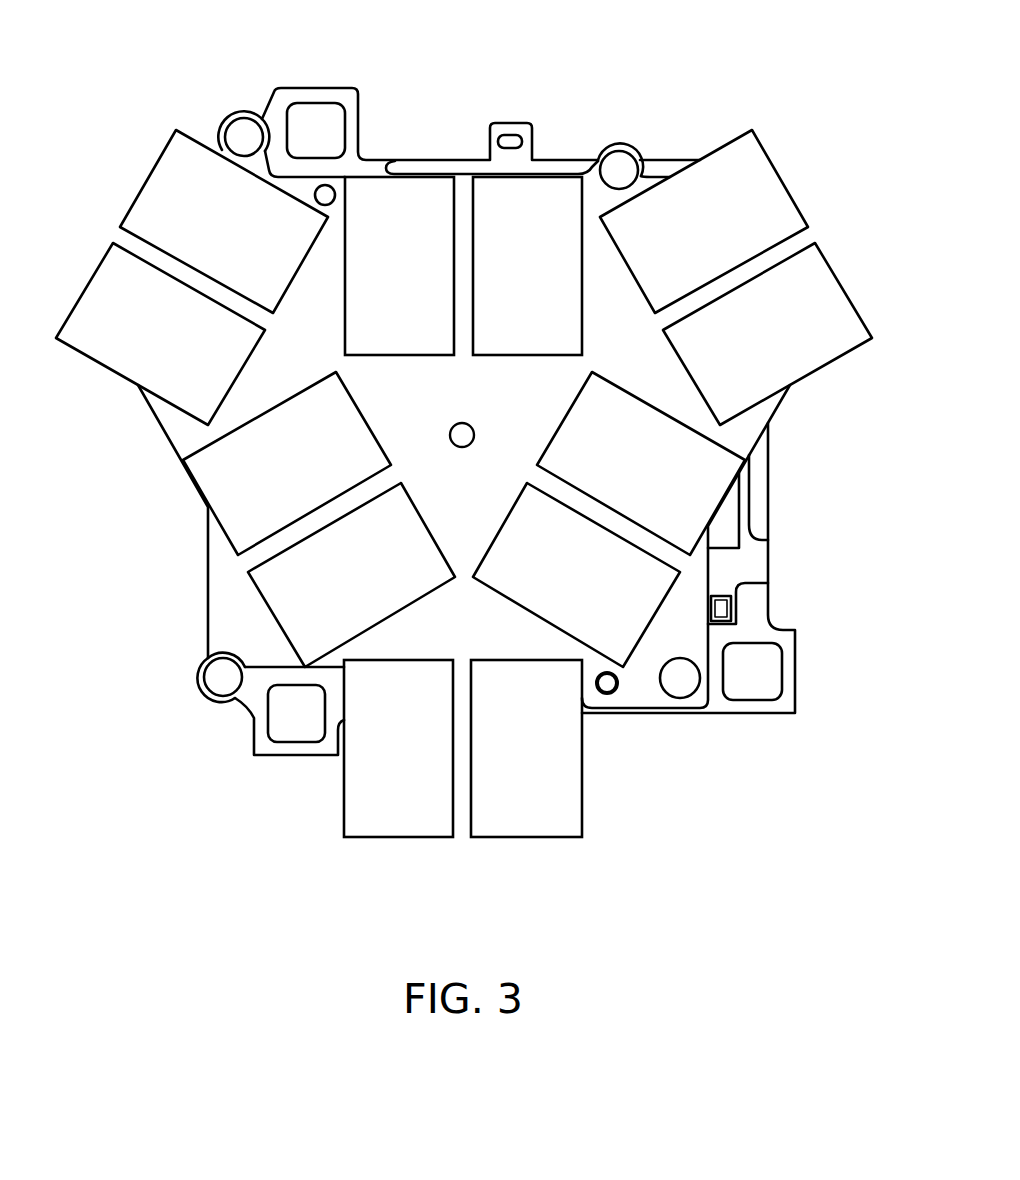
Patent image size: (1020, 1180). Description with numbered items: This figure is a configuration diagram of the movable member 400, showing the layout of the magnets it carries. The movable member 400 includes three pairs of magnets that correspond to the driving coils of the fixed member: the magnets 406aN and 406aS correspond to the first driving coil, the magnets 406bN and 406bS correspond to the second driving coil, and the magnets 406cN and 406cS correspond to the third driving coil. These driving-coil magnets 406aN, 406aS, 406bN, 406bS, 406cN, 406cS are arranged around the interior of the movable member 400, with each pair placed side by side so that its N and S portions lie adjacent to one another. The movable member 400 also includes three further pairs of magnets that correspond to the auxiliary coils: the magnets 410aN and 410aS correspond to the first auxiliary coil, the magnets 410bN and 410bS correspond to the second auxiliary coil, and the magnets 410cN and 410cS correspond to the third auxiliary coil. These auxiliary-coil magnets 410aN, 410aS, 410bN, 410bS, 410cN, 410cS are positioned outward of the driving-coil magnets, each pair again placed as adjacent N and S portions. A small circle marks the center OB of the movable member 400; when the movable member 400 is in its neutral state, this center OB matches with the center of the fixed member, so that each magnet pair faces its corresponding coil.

The movable member 400 is at (769, 66).
The magnet 410aN is at (162, 205).
The magnet 410aS is at (108, 298).
The magnet 410bN is at (398, 812).
The magnet 410bS is at (530, 812).
The magnet 410cN is at (817, 300).
The magnet 410cS is at (765, 207).
The magnet 406aN is at (432, 203).
The magnet 406aS is at (560, 203).
The magnet 406bN is at (283, 582).
The magnet 406bS is at (250, 494).
The magnet 406cN is at (677, 494).
The magnet 406cS is at (643, 582).
The center of the movable member OB is at (474, 433).